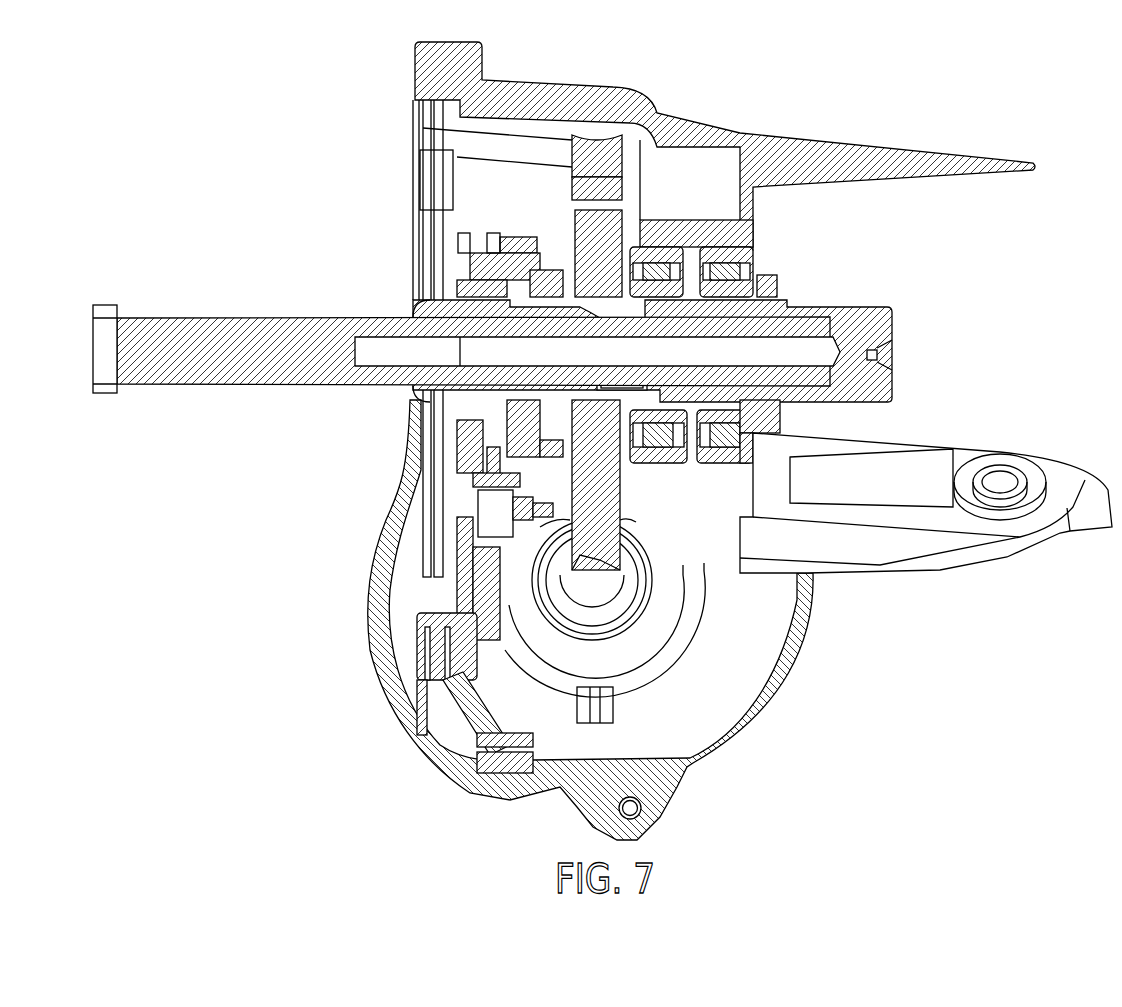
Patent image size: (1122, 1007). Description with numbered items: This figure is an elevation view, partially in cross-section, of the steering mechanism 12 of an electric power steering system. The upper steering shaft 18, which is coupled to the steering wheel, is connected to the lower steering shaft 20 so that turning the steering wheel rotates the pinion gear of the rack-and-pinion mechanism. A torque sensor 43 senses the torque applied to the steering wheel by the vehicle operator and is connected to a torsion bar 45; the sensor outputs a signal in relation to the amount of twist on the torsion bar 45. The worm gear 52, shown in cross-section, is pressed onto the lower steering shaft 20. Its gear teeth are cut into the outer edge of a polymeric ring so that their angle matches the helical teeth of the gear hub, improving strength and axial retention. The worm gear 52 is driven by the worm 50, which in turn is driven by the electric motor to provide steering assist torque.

The steering mechanism 12 is at (1068, 183).
The upper steering shaft 18 is at (198, 338).
The lower steering shaft 20 is at (887, 330).
The torque sensor 43 is at (480, 615).
The torsion bar 45 is at (380, 355).
The worm 50 is at (620, 598).
The worm gear 52 is at (620, 147).